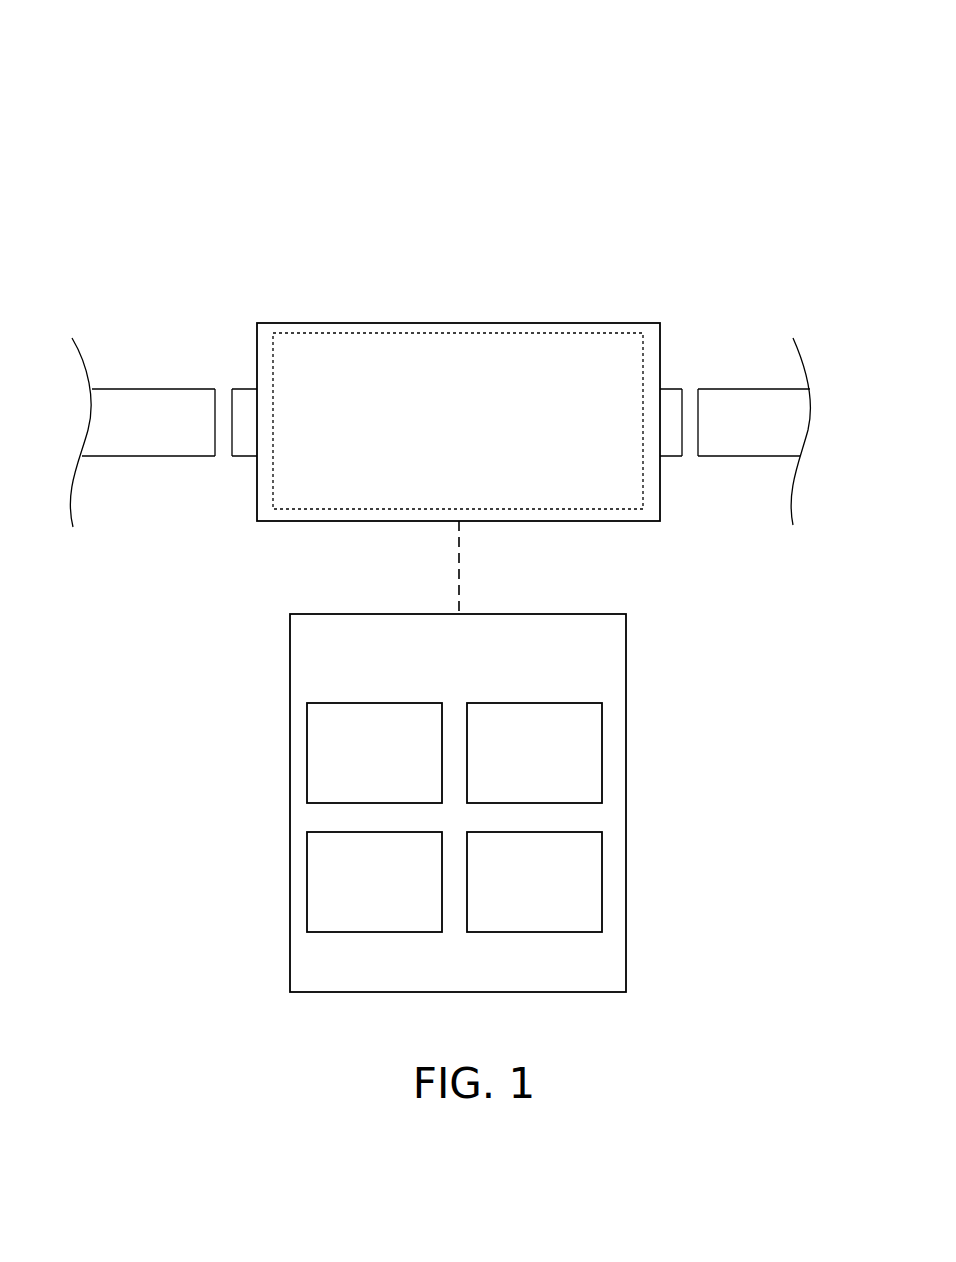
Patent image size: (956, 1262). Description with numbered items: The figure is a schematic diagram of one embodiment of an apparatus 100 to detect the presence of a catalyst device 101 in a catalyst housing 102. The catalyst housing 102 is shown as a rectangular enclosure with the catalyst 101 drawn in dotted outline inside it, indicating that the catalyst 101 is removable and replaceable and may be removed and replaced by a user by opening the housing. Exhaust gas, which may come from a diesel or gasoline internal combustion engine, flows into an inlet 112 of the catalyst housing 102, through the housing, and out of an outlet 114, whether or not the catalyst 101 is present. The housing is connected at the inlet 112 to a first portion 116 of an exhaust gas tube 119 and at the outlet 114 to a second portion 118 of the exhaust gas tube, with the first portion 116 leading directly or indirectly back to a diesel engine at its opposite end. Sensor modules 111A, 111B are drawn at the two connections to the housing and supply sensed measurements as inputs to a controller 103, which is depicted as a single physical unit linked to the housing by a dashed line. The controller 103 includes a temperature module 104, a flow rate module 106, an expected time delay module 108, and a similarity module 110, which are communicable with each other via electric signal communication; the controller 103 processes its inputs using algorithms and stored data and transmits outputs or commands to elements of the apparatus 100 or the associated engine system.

The apparatus 100 is at (222, 172).
The catalyst device 101 is at (388, 333).
The catalyst housing 102 is at (500, 322).
The controller 103 is at (440, 669).
The temperature module 104 is at (356, 764).
The flow rate module 106 is at (516, 764).
The expected time delay module 108 is at (356, 892).
The similarity module 110 is at (516, 892).
The sensor module 111A is at (225, 388).
The sensor module 111B is at (687, 388).
The inlet 112 is at (252, 423).
The outlet 114 is at (660, 422).
The first portion of exhaust gas tube 116 is at (148, 422).
The second portion of exhaust gas tube 118 is at (752, 422).
The exhaust gas tube 119 is at (170, 374).